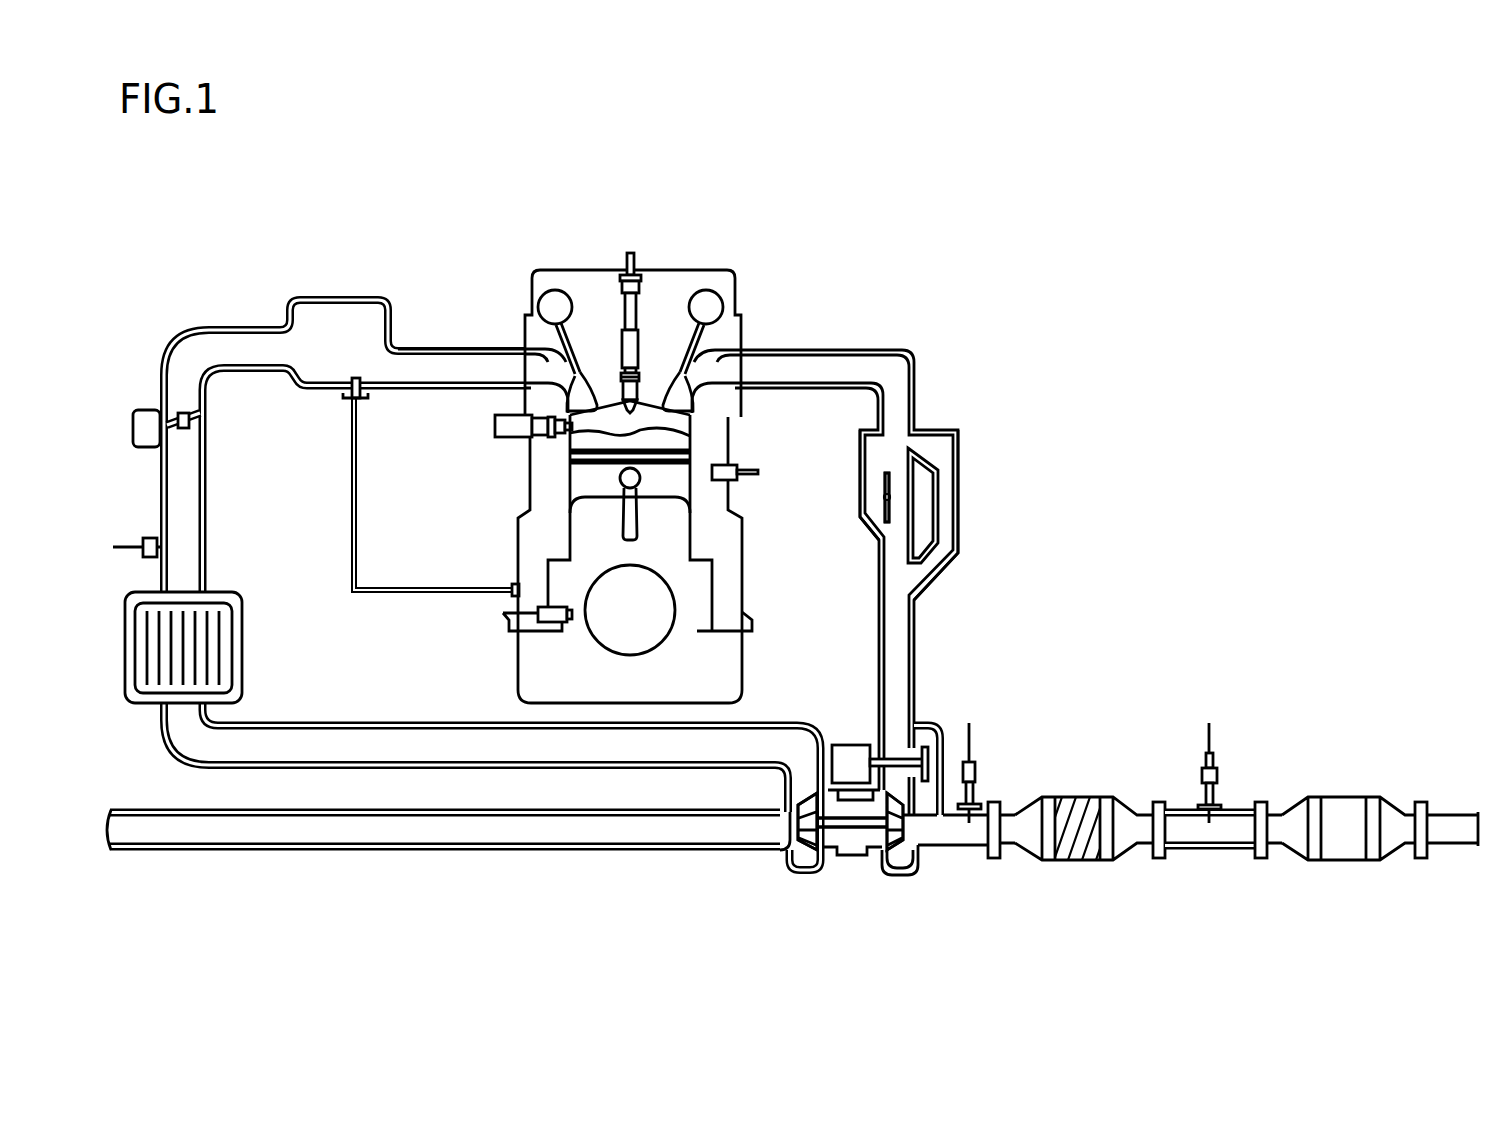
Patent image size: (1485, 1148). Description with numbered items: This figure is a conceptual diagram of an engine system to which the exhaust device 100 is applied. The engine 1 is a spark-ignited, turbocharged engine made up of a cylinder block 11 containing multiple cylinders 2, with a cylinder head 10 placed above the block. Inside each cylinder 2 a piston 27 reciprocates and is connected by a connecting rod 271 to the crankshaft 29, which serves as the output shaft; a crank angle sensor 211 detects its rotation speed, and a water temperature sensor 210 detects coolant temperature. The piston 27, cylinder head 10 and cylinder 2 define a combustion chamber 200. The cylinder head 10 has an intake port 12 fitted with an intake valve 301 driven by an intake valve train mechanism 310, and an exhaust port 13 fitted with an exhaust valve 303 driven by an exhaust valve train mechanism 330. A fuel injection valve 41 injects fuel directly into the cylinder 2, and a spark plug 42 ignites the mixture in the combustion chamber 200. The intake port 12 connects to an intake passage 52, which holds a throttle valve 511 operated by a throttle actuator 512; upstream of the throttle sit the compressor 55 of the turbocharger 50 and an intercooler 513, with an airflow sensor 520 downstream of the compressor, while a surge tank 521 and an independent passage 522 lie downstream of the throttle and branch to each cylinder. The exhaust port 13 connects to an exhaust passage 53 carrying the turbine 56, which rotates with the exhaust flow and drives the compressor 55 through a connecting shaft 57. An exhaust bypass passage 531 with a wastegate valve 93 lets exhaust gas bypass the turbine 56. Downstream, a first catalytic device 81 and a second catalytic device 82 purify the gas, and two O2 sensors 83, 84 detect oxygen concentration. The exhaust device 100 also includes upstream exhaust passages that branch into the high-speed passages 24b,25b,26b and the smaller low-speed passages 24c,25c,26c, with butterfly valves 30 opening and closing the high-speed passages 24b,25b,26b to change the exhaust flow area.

The engine 1 is at (632, 402).
The exhaust device 100 is at (990, 392).
The cylinder head 10 is at (631, 326).
The cylinder 2 is at (633, 559).
The cylinder block 11 is at (743, 563).
The intake port 12 is at (520, 350).
The exhaust port 13 is at (744, 353).
The piston 27 is at (568, 479).
The connecting rod 271 is at (622, 528).
The crankshaft 29 is at (677, 597).
The combustion chamber 200 is at (678, 427).
The water temperature sensor 210 is at (738, 482).
The crank angle sensor 211 is at (565, 623).
The fuel injection valve 41 is at (514, 437).
The spark plug 42 is at (641, 340).
The intake valve 301 is at (573, 342).
The exhaust valve 303 is at (735, 316).
The intake valve train mechanism 310 is at (551, 290).
The exhaust valve train mechanism 330 is at (708, 292).
The butterfly valve 30 is at (890, 480).
The high-speed passages 24b,25b,26b is at (877, 513).
The low-speed passages 24c,25c,26c is at (945, 527).
The turbocharger 50 is at (765, 868).
The compressor 55 is at (805, 852).
The turbine 56 is at (895, 852).
The connecting shaft 57 is at (852, 830).
The intake passage 52 is at (381, 722).
The exhaust passage 53 is at (823, 392).
The exhaust bypass passage 531 is at (938, 725).
The wastegate valve 93 is at (888, 760).
The first catalytic device 81 is at (1083, 862).
The second catalytic device 82 is at (1345, 862).
The O2 sensor 83 is at (978, 773).
The O2 sensor 84 is at (1218, 773).
The throttle valve 511 is at (201, 435).
The throttle actuator 512 is at (147, 410).
The intercooler 513 is at (243, 652).
The airflow sensor 520 is at (147, 536).
The surge tank 521 is at (342, 297).
The independent passage 522 is at (418, 347).